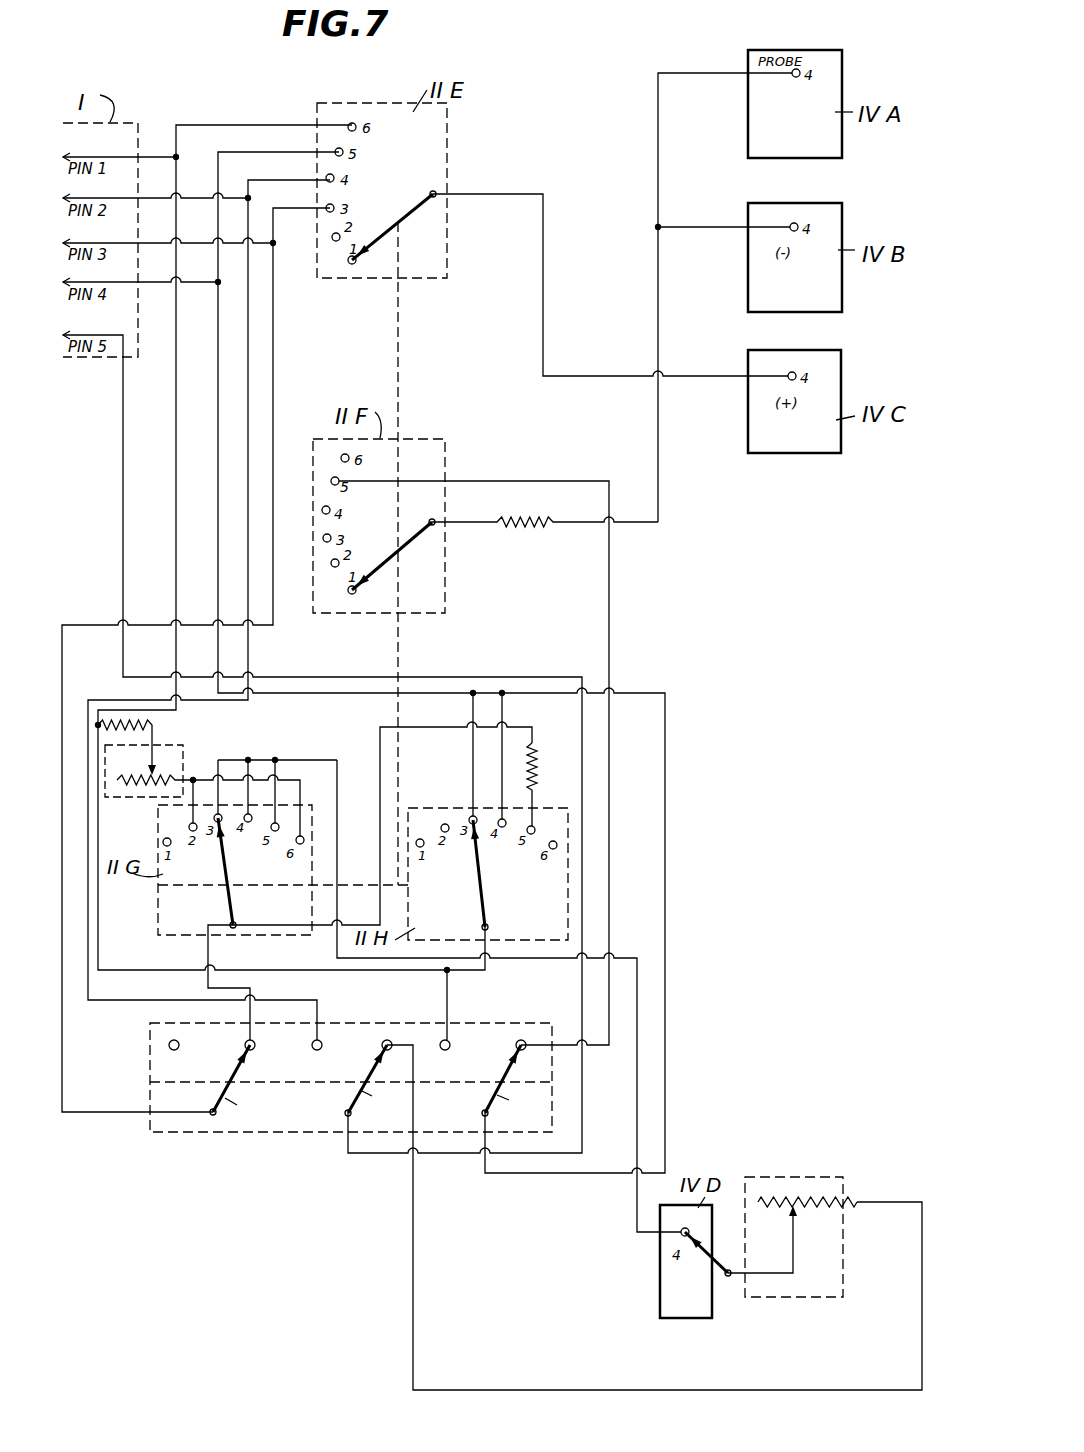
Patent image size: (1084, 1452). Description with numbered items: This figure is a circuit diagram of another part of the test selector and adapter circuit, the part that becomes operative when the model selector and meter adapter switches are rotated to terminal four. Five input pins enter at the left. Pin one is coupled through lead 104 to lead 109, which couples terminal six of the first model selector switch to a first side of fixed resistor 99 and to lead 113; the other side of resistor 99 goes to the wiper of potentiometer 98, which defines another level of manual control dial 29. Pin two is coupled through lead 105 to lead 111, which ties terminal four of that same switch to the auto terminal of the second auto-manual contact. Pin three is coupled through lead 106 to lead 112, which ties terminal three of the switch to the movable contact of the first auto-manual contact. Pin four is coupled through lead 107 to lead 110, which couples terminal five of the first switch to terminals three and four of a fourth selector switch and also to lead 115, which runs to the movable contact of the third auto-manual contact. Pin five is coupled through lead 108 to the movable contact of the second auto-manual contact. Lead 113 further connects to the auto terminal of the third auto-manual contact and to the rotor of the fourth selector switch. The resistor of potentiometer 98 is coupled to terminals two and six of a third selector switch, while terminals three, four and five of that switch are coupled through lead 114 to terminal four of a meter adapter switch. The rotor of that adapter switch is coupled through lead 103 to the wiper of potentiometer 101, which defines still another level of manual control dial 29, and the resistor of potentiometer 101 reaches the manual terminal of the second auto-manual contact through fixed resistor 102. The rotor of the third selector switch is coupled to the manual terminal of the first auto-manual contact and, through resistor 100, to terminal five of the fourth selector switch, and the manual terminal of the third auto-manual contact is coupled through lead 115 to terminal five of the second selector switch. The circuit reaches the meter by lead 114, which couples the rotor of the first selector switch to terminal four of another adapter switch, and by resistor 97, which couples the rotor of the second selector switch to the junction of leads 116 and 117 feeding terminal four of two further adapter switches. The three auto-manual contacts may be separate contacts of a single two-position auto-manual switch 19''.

The lead 104 is at (166, 160).
The lead 105 is at (166, 200).
The lead 106 is at (166, 244).
The lead 107 is at (168, 282).
The lead 108 is at (123, 446).
The lead 109 is at (270, 122).
The lead 110 is at (252, 151).
The lead 111 is at (287, 178).
The lead 112 is at (275, 338).
The lead 113 is at (96, 958).
The lead 114 is at (694, 372).
The lead 115 is at (556, 480).
The lead 116 is at (712, 70).
The lead 117 is at (703, 226).
The resistor 97 is at (540, 522).
The potentiometer 98 is at (143, 790).
The fixed resistor 99 is at (137, 722).
The resistor 100 is at (537, 775).
The potentiometer 101 is at (781, 1195).
The fixed resistor 102 is at (860, 1202).
The lead 103 is at (795, 1256).
The manual control dial 29 is at (170, 756).
The auto-manual switch 19'' is at (351, 1098).